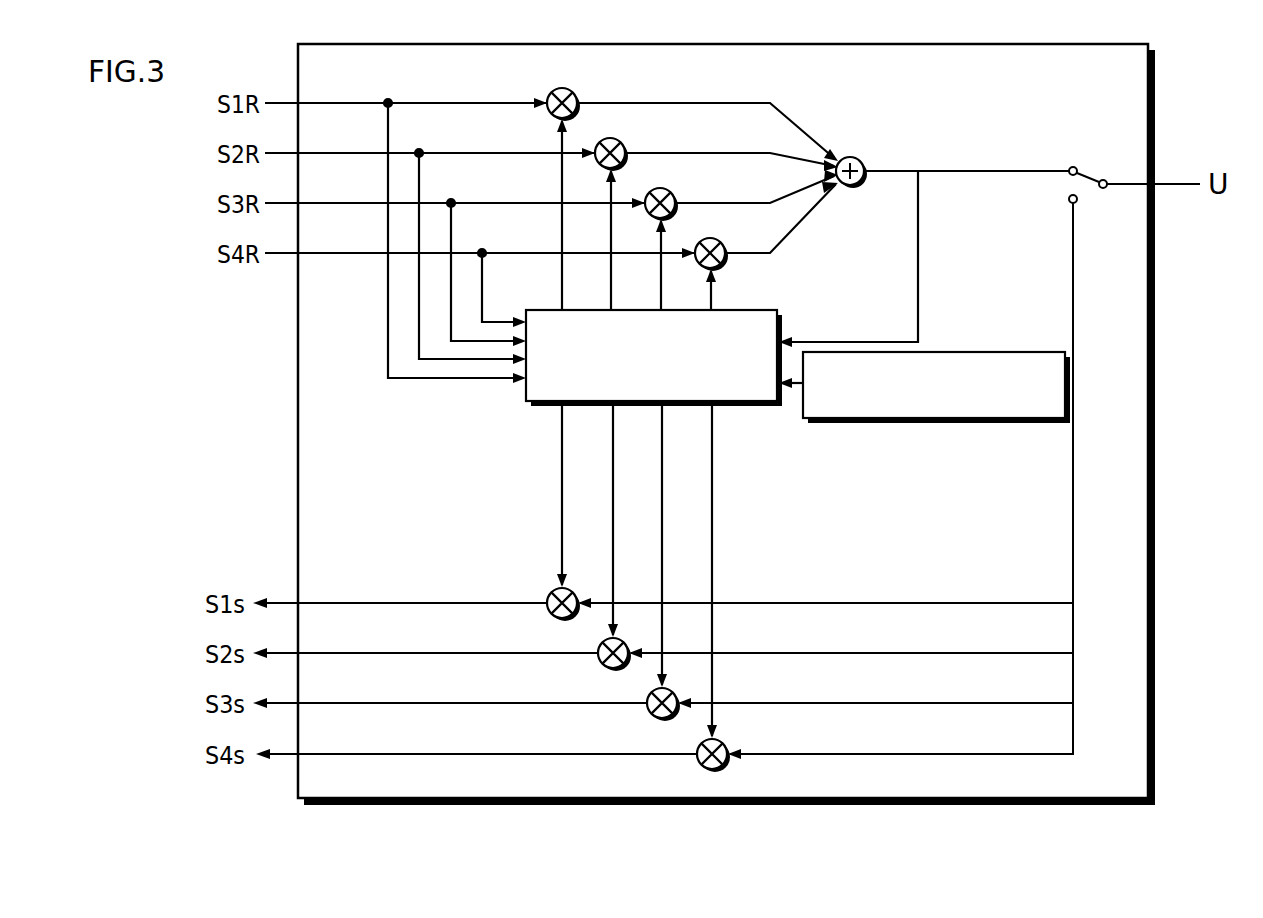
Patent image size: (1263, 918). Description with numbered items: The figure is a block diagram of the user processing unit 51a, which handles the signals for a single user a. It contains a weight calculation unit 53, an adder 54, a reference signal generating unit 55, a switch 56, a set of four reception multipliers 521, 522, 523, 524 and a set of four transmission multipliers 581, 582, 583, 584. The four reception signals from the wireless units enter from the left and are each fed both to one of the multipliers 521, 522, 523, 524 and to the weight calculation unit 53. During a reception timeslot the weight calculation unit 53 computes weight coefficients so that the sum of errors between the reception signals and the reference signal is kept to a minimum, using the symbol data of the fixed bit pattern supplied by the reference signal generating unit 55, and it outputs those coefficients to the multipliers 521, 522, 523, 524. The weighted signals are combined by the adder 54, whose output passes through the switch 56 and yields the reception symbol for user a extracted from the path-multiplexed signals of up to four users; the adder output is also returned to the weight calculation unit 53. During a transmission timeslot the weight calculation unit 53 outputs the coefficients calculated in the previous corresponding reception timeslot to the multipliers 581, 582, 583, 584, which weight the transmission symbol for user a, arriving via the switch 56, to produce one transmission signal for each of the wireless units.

The user processing unit 51a is at (726, 424).
The multiplier 521 is at (575, 95).
The multiplier 522 is at (623, 145).
The multiplier 523 is at (673, 195).
The multiplier 524 is at (723, 245).
The weight calculation unit 53 is at (746, 309).
The adder 54 is at (862, 163).
The reference signal generating unit 55 is at (972, 352).
The switch 56 is at (1085, 178).
The multiplier 581 is at (573, 592).
The multiplier 582 is at (624, 642).
The multiplier 583 is at (673, 692).
The multiplier 584 is at (723, 743).